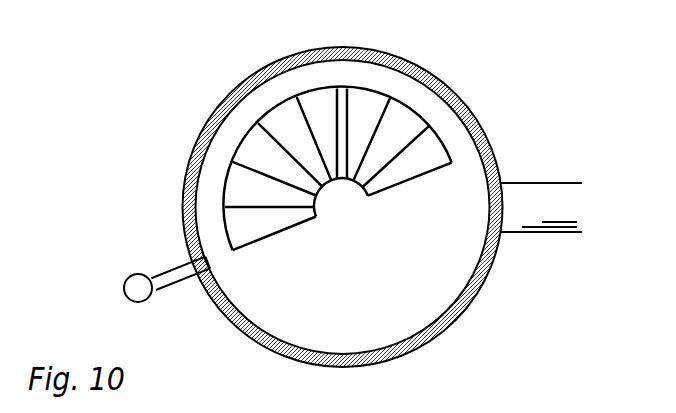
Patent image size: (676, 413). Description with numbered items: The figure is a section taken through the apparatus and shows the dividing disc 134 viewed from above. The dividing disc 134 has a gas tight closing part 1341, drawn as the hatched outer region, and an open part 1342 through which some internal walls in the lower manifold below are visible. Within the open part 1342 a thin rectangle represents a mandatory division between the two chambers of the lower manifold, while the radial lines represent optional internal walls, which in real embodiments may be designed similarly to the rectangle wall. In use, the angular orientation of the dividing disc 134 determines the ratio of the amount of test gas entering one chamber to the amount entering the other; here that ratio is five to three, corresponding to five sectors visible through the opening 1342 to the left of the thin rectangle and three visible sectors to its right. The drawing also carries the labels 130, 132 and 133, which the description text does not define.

The housing 130 is at (440, 80).
The inlet pipe 132 is at (523, 190).
The handle 133 is at (172, 262).
The dividing disc 134 is at (230, 125).
The gas tight closing part 1341 is at (457, 263).
The open part 1342 is at (257, 222).